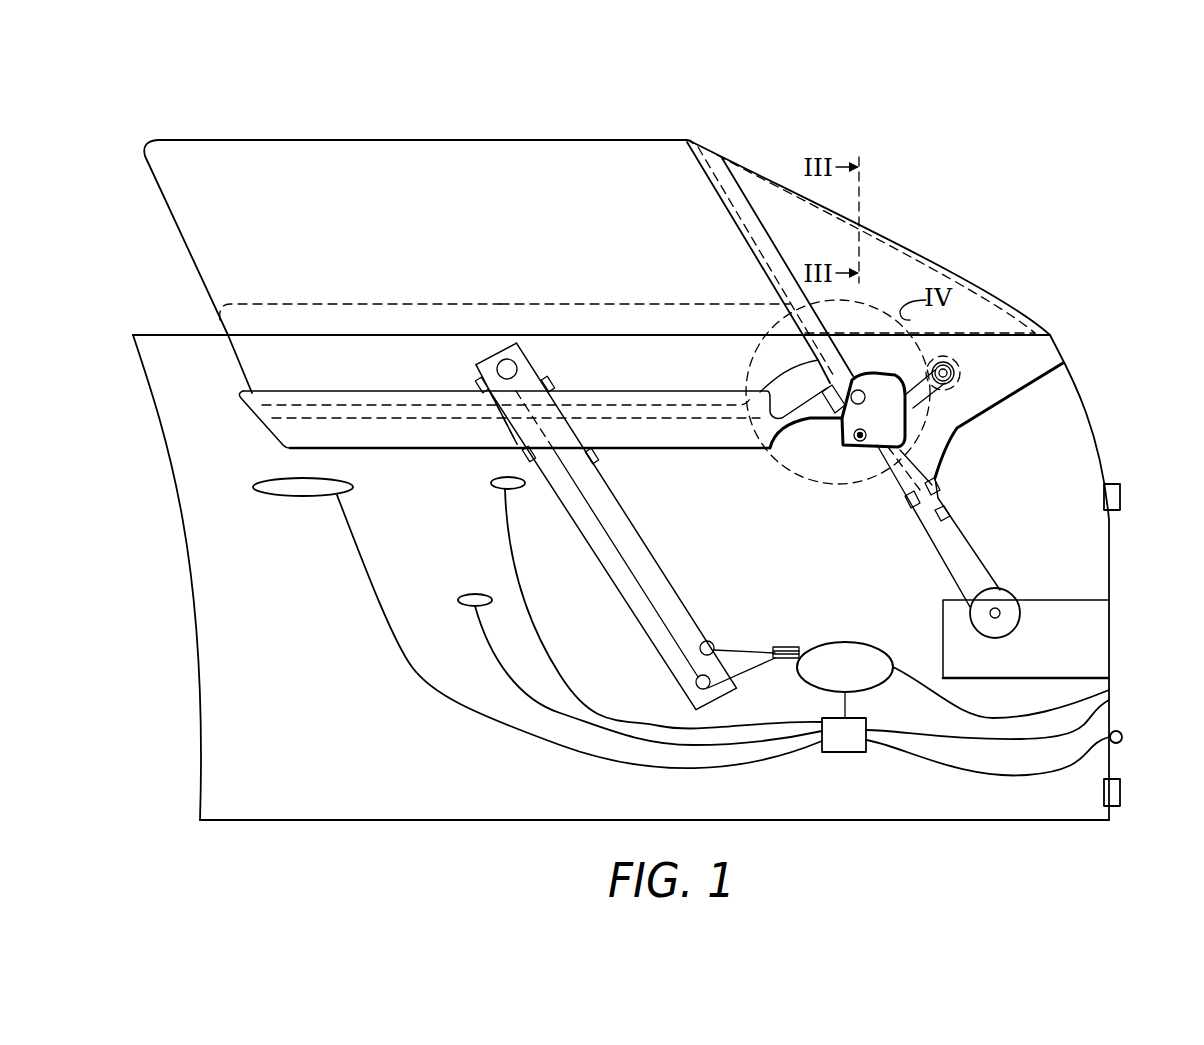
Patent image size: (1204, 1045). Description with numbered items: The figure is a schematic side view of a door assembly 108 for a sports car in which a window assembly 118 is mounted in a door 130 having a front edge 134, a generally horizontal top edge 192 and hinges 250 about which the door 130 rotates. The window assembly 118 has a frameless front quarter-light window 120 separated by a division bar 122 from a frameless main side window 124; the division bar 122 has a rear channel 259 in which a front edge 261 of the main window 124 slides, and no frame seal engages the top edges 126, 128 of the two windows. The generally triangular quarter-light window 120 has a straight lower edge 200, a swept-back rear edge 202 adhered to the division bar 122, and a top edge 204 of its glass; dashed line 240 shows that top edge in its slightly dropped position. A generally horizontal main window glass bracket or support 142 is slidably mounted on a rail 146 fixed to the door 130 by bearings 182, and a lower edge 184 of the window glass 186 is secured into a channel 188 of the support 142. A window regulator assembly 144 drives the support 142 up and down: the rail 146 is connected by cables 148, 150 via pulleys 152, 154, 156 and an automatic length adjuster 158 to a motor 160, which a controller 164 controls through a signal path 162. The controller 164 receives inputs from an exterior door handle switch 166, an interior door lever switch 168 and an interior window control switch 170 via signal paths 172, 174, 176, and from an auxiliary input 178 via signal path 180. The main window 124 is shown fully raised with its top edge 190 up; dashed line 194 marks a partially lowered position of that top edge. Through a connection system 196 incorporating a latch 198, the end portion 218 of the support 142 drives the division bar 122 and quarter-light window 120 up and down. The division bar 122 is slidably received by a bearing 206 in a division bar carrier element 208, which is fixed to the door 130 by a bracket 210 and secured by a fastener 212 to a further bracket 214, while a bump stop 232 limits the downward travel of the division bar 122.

The door assembly 108 is at (846, 834).
The window assembly 118 is at (974, 254).
The quarter-light window 120 is at (780, 207).
The division bar 122 is at (712, 152).
The main side window 124 is at (528, 139).
The top edge of quarter-light window 126 is at (927, 253).
The top edge of main window 128 is at (353, 138).
The door 130 is at (285, 821).
The front edge of door 134 is at (1112, 563).
The main window glass bracket or support 142 is at (428, 441).
The window regulator assembly 144 is at (774, 622).
The rail 146 is at (683, 600).
The cable 148 is at (627, 582).
The cable 150 is at (643, 541).
The pulley 152 is at (507, 358).
The pulley 154 is at (697, 688).
The pulley 156 is at (712, 641).
The automatic length adjuster 158 is at (777, 660).
The motor 160 is at (874, 642).
The signal path 162 is at (847, 703).
The controller 164 is at (845, 757).
The exterior door handle switch 166 is at (307, 497).
The interior door lever switch 168 is at (467, 593).
The interior user-operable window control switch 170 is at (497, 490).
The signal path 172 is at (380, 605).
The signal path 174 is at (503, 680).
The signal path 176 is at (508, 552).
The auxiliary input 178 is at (1123, 736).
The signal path 180 is at (973, 764).
The bearings 182 is at (478, 384).
The lower edge of window glass 184 is at (380, 408).
The window glass 186 is at (292, 219).
The channel 188 is at (258, 430).
The top edge of main window 190 is at (268, 138).
The top edge of door 192 is at (261, 333).
The dashed line 194 is at (360, 301).
The connection system 196 is at (836, 462).
The latch 198 is at (878, 468).
The lower edge of quarter-light 200 is at (1010, 370).
The rear edge of quarter-light 202 is at (740, 192).
The top edge of quarter-light window glass 204 is at (875, 227).
The bearing 206 is at (937, 483).
The division bar carrier element 208 is at (972, 568).
The bracket 210 is at (1035, 372).
The fastener 212 is at (998, 620).
The bracket 214 is at (1093, 638).
The end portion of support 218 is at (785, 458).
The bump stop 232 is at (950, 512).
The dashed line 240 is at (742, 172).
The hinges 250 is at (1122, 494).
The rear channel 259 is at (748, 246).
The front edge of main window 261 is at (722, 228).